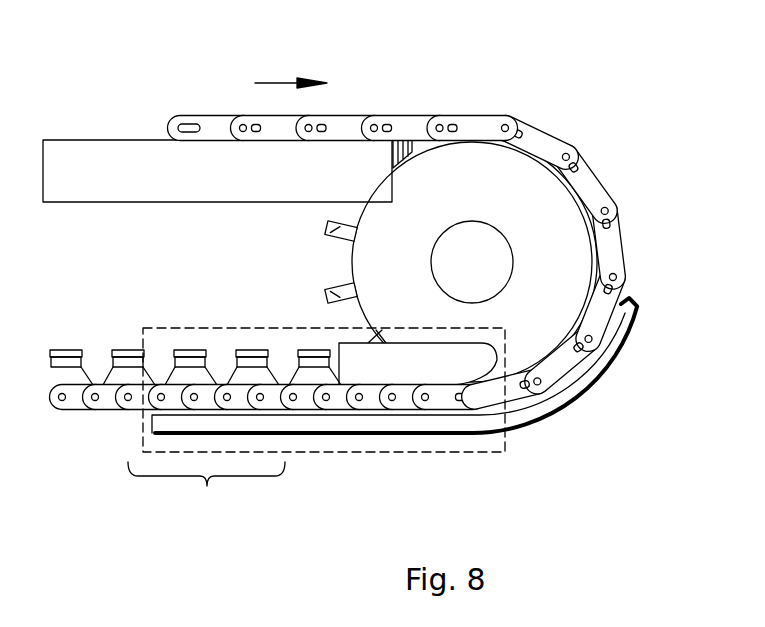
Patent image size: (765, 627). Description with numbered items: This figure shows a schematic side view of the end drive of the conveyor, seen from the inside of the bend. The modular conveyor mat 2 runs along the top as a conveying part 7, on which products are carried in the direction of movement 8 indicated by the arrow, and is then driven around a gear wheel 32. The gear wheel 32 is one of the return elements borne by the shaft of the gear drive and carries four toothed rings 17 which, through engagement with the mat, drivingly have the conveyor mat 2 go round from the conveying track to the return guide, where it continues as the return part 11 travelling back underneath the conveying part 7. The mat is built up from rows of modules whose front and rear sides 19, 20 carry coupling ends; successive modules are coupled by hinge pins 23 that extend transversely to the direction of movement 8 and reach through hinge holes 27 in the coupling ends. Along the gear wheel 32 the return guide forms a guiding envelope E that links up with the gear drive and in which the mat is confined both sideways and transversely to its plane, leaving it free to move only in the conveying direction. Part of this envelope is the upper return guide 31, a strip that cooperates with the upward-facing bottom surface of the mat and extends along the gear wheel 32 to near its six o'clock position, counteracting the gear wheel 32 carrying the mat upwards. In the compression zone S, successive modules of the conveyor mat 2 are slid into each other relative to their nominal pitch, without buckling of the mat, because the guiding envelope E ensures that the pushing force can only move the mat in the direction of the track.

The conveying part 7 is at (357, 113).
The direction of movement 8 is at (278, 83).
The modular conveyor mat 2 is at (593, 222).
The rear side 20 is at (585, 157).
The front side 19 is at (615, 196).
The hinge hole 27 is at (612, 230).
The hinge pin 23 is at (617, 277).
The gear wheel 32 is at (548, 299).
The toothed ring 17 is at (338, 290).
The return part 11 is at (107, 407).
The upper return guide 31 is at (432, 362).
The guiding envelope E is at (507, 443).
The compression zone S is at (206, 491).